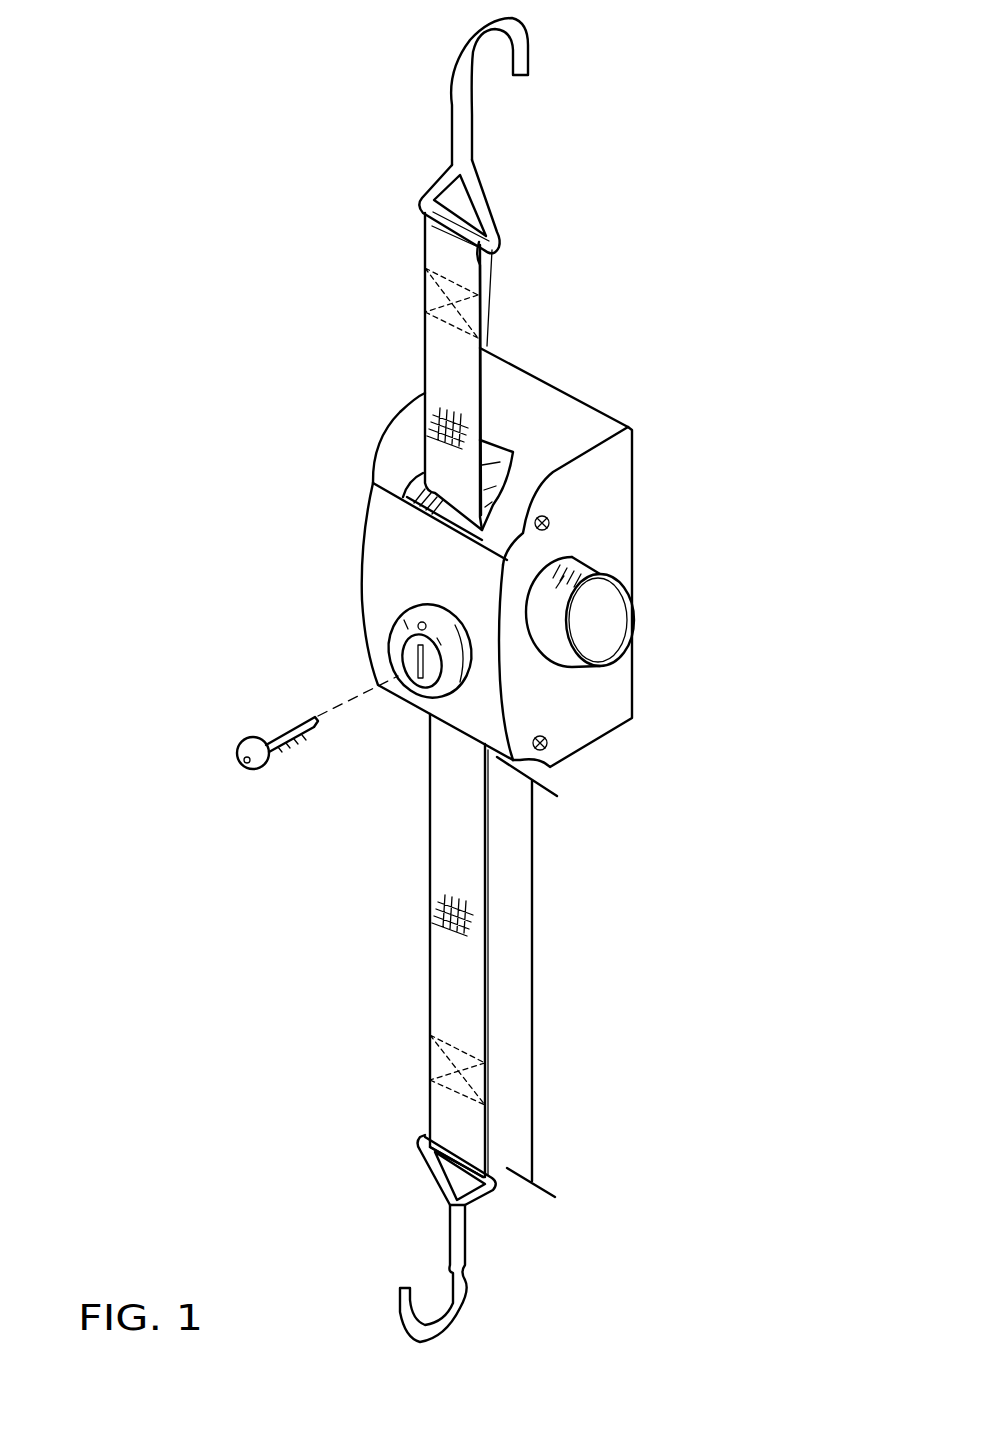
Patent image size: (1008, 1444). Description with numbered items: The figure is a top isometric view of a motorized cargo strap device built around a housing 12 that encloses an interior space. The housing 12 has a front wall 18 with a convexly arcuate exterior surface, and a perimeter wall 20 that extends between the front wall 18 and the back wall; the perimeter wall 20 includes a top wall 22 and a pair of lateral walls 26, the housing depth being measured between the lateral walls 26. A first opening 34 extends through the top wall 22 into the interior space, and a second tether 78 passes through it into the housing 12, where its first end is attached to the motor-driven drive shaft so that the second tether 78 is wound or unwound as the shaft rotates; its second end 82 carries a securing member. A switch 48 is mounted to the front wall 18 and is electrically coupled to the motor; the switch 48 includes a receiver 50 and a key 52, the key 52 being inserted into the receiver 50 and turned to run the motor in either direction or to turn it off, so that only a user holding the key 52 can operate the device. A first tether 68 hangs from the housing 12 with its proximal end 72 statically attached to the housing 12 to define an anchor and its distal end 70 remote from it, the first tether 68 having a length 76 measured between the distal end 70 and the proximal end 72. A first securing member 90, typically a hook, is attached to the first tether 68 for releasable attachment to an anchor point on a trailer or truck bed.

The housing 12 is at (778, 415).
The front wall 18 is at (390, 535).
The perimeter wall 20 is at (607, 488).
The top wall 22 is at (575, 422).
The lateral walls 26 is at (607, 537).
The first opening 34 is at (505, 412).
The switch 48 is at (332, 652).
The receiver 50 is at (420, 672).
The key 52 is at (250, 767).
The first tether 68 is at (350, 1005).
The distal end 70 is at (452, 1128).
The proximal end 72 is at (453, 738).
The length 76 is at (532, 983).
The second tether 78 is at (596, 209).
The second end 82 is at (442, 249).
The first securing member 90 is at (452, 93).